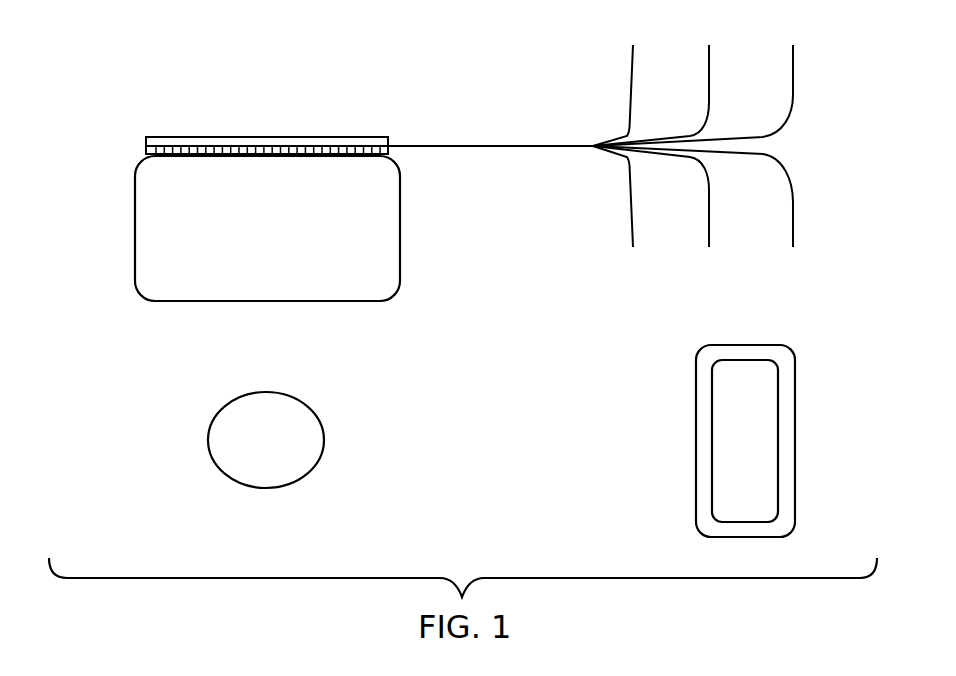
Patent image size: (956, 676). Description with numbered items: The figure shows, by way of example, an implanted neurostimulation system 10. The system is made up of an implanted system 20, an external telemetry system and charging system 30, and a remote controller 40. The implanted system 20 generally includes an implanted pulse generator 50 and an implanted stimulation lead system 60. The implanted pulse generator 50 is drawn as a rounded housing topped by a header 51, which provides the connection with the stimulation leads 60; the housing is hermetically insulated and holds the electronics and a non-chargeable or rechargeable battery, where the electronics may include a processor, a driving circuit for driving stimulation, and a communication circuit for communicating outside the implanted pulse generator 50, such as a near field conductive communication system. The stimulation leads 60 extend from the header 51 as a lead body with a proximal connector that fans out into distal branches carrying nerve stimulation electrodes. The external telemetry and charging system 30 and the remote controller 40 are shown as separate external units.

The implanted neurostimulation system 10 is at (153, 53).
The implanted system 20 is at (112, 204).
The external telemetry system and charging system 30 is at (265, 392).
The remote controller 40 is at (745, 345).
The implanted pulse generator 50 is at (400, 230).
The header 51 is at (265, 137).
The implanted stimulation lead system 60 is at (813, 50).